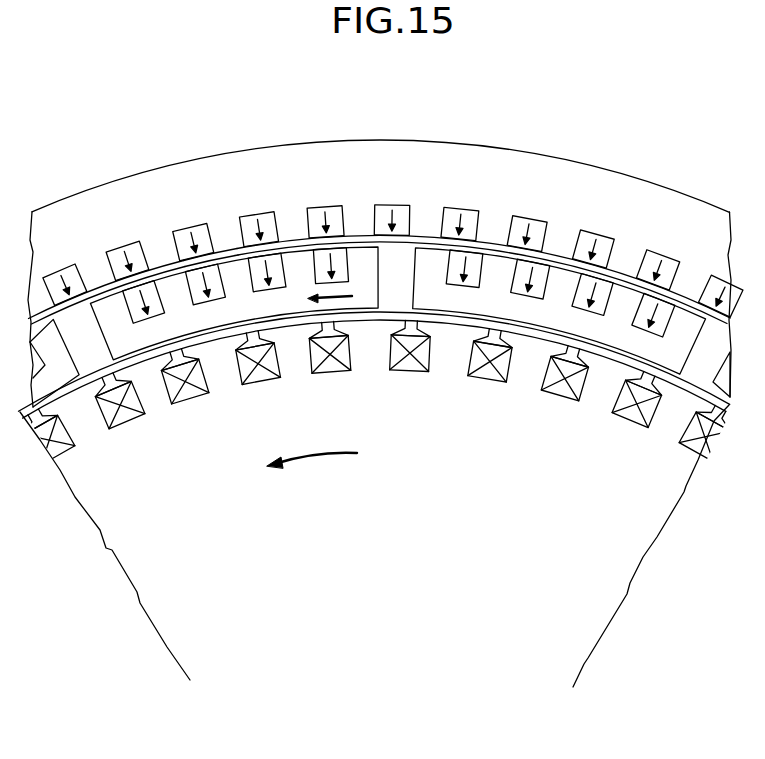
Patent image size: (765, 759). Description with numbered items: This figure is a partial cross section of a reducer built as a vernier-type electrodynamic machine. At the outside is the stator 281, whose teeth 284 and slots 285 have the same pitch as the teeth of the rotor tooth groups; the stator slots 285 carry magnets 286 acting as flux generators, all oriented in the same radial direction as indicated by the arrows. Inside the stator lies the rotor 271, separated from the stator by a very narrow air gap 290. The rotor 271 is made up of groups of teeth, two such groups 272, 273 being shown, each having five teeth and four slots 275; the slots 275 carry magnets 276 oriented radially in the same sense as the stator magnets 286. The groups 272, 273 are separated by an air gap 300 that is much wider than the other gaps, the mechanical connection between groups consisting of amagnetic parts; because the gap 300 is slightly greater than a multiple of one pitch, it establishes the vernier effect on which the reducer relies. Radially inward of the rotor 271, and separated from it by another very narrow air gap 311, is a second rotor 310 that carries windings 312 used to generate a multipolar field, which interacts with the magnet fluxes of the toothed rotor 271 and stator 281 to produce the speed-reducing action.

The stator 281 is at (497, 177).
The teeth 284 is at (160, 262).
The slots 285 is at (182, 253).
The magnets 286 is at (208, 243).
The air gap 290 is at (290, 243).
The rotor 271 is at (50, 377).
The group of teeth 272 is at (262, 302).
The group of teeth 273 is at (607, 330).
The slots 275 is at (125, 293).
The magnets 276 is at (152, 298).
The air gap 300 is at (393, 273).
The second rotor 310 is at (578, 547).
The air gap 311 is at (540, 333).
The windings 312 is at (488, 368).